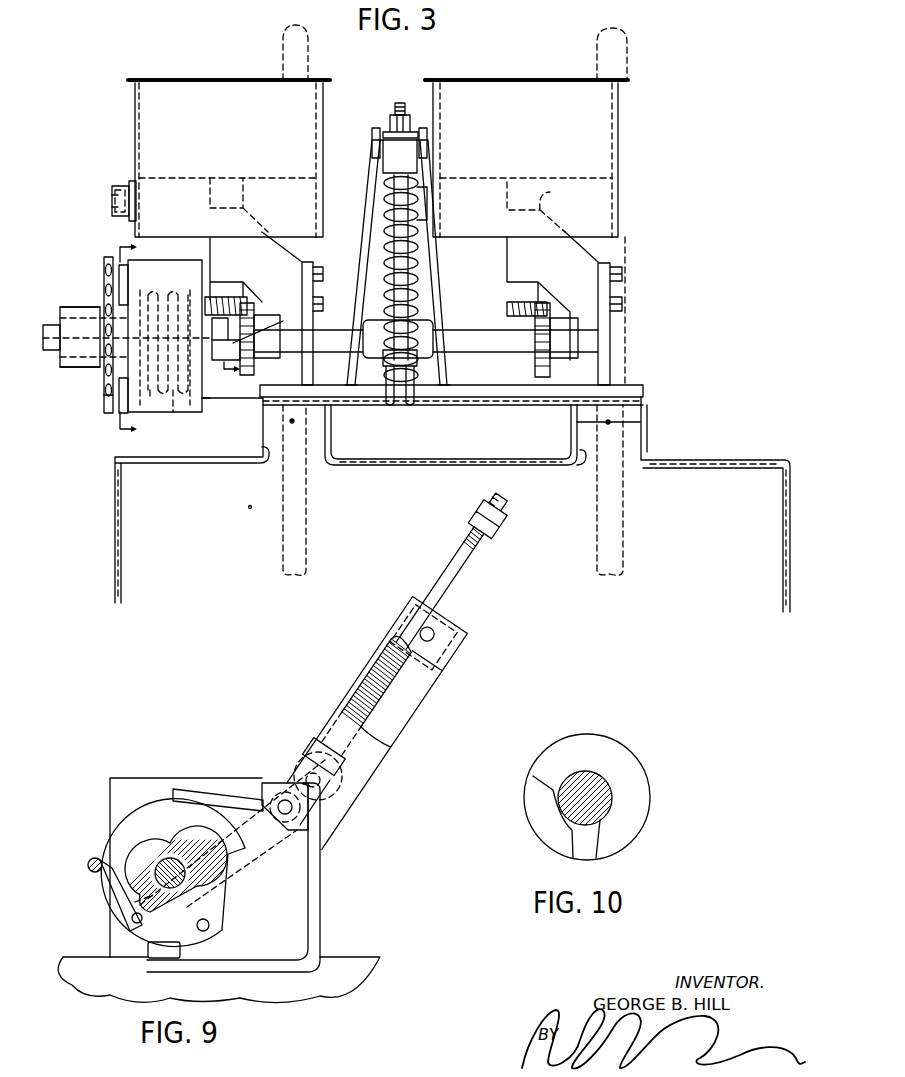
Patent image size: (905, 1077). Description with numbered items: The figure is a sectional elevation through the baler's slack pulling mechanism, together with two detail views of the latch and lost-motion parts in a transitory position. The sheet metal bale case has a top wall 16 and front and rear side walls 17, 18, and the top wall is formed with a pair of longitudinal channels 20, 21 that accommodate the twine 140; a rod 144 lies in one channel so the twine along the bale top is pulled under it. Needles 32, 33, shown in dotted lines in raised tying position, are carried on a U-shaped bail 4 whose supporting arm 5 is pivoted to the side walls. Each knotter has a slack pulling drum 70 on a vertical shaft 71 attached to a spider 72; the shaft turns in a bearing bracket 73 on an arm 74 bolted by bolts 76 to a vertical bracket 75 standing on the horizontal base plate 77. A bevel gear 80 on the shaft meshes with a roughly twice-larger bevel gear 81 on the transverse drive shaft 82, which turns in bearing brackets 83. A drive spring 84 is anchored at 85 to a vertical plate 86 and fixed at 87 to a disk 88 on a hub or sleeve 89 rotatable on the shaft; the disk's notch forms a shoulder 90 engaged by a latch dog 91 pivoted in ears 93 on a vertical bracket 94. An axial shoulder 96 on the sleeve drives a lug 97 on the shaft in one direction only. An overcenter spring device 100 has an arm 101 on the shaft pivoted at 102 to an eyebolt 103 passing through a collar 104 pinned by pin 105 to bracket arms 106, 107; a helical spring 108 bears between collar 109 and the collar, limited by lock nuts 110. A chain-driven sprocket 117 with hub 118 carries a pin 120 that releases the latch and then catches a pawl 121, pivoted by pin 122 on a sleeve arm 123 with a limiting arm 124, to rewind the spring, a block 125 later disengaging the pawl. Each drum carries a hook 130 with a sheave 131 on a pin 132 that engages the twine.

In FIG. 3, the U-shaped bail 4 is at (134, 341).
In FIG. 3, the supporting arm 5 is at (254, 346).
In FIG. 3, the top wall 16 is at (478, 466).
In FIG. 3, the front side wall 17 is at (121, 535).
In FIG. 3, the rear side wall 18 is at (785, 551).
In FIG. 3, the channel 20 is at (267, 464).
In FIG. 3, the channel 21 is at (580, 466).
In FIG. 3, the needle 32 is at (308, 548).
In FIG. 3, the needle 33 is at (626, 531).
In FIG. 3, the drum 70 is at (601, 123).
In FIG. 3, the vertical shaft 71 is at (212, 192).
In FIG. 3, the spider 72 is at (195, 178).
In FIG. 3, the vertical bearing bracket 73 is at (507, 262).
In FIG. 3, the arm 74 is at (592, 264).
In FIG. 3, the vertical bracket 75 is at (306, 368).
In FIG. 3, the bolts 76 is at (621, 303).
In FIG. 3, the base plate 77 is at (472, 397).
In FIG. 3, the bevel gear 80 is at (229, 297).
In FIG. 3, the bevel gear 81 is at (542, 358).
In FIG. 3, the drive shaft 82 is at (482, 340).
In FIG. 9, the drive shaft 82 is at (167, 870).
In FIG. 10, the drive shaft 82 is at (586, 784).
In FIG. 3, the bearing brackets 83 is at (418, 351).
In FIG. 3, the spring 84 is at (173, 412).
In FIG. 3, the anchor point 85 is at (192, 290).
In FIG. 3, the vertical plate 86 is at (208, 398).
In FIG. 9, the vertical plate 86 is at (151, 781).
In FIG. 3, the spring attachment 87 is at (150, 400).
In FIG. 3, the disk 88 is at (135, 290).
In FIG. 9, the disk 88 is at (125, 818).
In FIG. 3, the hub or sleeve 89 is at (205, 372).
In FIG. 9, the hub or sleeve 89 is at (152, 866).
In FIG. 9, the shoulder 90 is at (238, 853).
In FIG. 9, the latch dog 91 is at (212, 790).
In FIG. 3, the ears 93 is at (122, 275).
In FIG. 9, the ears 93 is at (290, 831).
In FIG. 3, the vertical bracket 94 is at (145, 266).
In FIG. 9, the vertical bracket 94 is at (316, 878).
In FIG. 3, the shoulder 96 is at (233, 338).
In FIG. 10, the shoulder 96 is at (567, 858).
In FIG. 3, the lug 97 is at (228, 352).
In FIG. 10, the lug 97 is at (596, 857).
In FIG. 3, the overcenter spring device 100 is at (402, 254).
In FIG. 9, the overcenter spring device 100 is at (413, 671).
In FIG. 3, the arm 101 is at (385, 380).
In FIG. 9, the arm 101 is at (266, 846).
In FIG. 9, the pivotal connection 102 is at (310, 765).
In FIG. 3, the eyebolt 103 is at (400, 207).
In FIG. 9, the eyebolt 103 is at (455, 565).
In FIG. 3, the collar 104 is at (414, 133).
In FIG. 9, the collar 104 is at (392, 635).
In FIG. 3, the pin 105 is at (372, 150).
In FIG. 9, the pin 105 is at (435, 633).
In FIG. 3, the bracket arm 106 is at (372, 190).
In FIG. 9, the bracket arm 106 is at (375, 752).
In FIG. 3, the bracket arm 107 is at (430, 237).
In FIG. 9, the bracket arm 107 is at (416, 692).
In FIG. 3, the helical spring 108 is at (411, 295).
In FIG. 9, the helical spring 108 is at (358, 688).
In FIG. 3, the collar 109 is at (412, 378).
In FIG. 9, the collar 109 is at (320, 742).
In FIG. 3, the lock nuts 110 is at (396, 130).
In FIG. 9, the lock nuts 110 is at (493, 512).
In FIG. 3, the sprocket 117 is at (106, 405).
In FIG. 3, the hub 118 is at (73, 363).
In FIG. 9, the pin 120 is at (88, 866).
In FIG. 9, the pawl 121 is at (108, 882).
In FIG. 9, the pin 122 is at (133, 921).
In FIG. 9, the arm 123 is at (135, 905).
In FIG. 9, the arm 124 is at (179, 917).
In FIG. 9, the block 125 is at (160, 952).
In FIG. 3, the hook 130 is at (412, 207).
In FIG. 3, the sheave 131 is at (129, 182).
In FIG. 3, the pin 132 is at (112, 203).
In FIG. 3, the twine 140 is at (286, 421).
In FIG. 3, the rod 144 is at (318, 414).